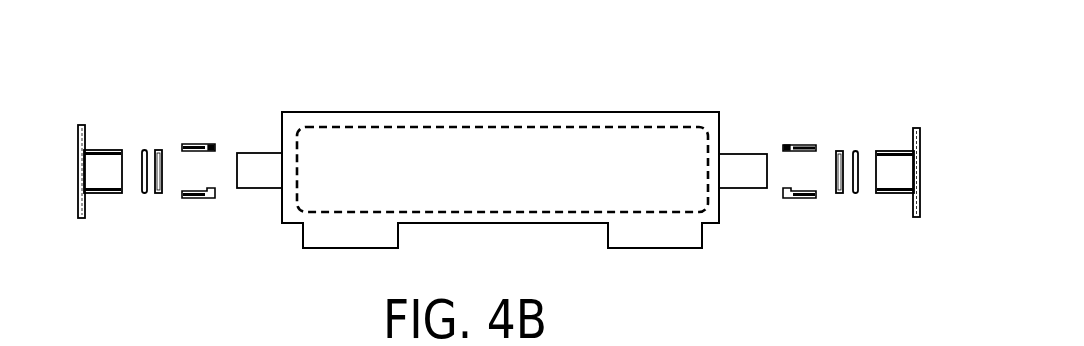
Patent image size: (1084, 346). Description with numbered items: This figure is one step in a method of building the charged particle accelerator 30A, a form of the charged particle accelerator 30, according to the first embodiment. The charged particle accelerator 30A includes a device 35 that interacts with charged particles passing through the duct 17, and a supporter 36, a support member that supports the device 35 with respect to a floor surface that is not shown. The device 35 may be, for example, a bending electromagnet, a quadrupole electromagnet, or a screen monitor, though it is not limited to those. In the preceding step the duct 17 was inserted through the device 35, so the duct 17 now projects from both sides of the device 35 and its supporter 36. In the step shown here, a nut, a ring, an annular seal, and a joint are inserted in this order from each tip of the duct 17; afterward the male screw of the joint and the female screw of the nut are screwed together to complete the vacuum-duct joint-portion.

The duct 17 is at (255, 153).
The charged particle accelerator 30A is at (303, 74).
The charged particle accelerator 30 is at (475, 125).
The device 35 is at (407, 127).
The supporter 36 is at (620, 113).